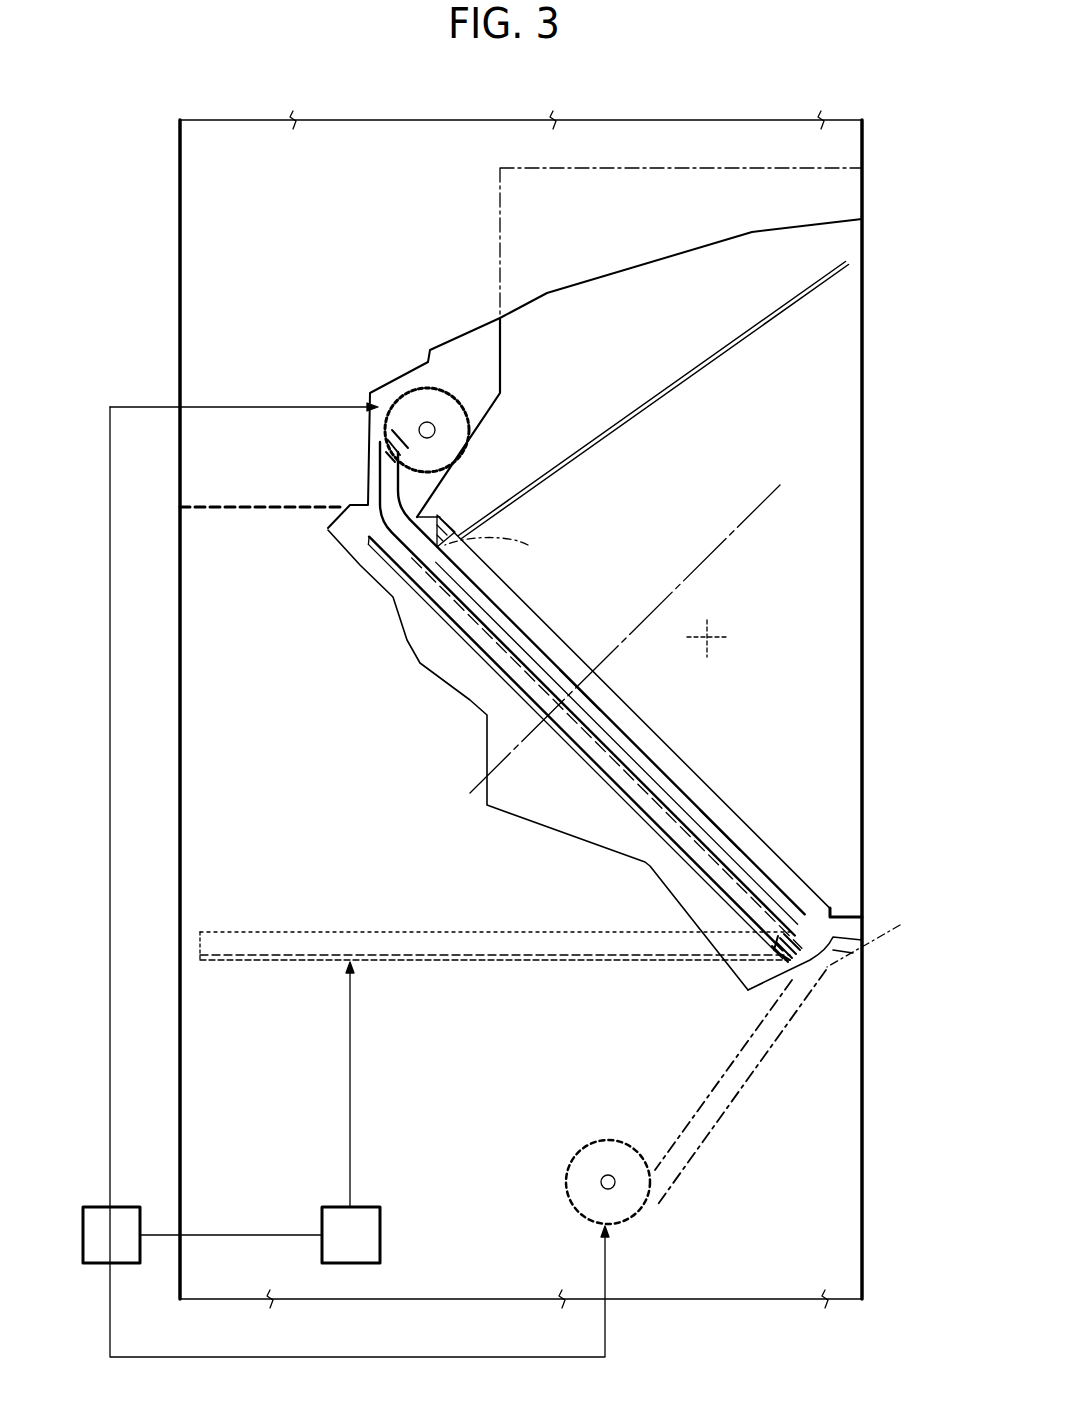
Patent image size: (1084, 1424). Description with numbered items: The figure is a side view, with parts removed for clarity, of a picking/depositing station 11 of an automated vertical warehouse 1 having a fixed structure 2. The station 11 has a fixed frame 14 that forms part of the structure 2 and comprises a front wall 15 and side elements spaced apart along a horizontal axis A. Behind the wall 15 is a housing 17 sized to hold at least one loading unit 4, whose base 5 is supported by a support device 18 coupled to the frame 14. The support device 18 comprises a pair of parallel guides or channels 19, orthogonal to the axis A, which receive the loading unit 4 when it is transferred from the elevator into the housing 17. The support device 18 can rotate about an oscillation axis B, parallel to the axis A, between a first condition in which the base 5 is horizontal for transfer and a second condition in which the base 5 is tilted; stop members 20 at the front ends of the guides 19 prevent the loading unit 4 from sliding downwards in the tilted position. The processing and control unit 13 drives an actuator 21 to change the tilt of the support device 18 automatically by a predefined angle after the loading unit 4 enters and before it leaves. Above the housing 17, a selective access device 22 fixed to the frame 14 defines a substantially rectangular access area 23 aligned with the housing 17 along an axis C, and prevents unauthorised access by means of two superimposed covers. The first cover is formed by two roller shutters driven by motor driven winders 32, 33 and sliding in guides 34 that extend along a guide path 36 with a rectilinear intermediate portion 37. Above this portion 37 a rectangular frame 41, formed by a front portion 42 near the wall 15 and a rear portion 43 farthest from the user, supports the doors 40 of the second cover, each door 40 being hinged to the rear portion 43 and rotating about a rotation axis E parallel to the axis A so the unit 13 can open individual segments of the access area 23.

The automated vertical warehouse 1 is at (150, 74).
The fixed structure 2 is at (170, 217).
The loading unit 4 is at (358, 530).
The base 5 is at (362, 566).
The picking/depositing station 11 is at (872, 232).
The processing and control unit 13 is at (95, 1210).
The fixed frame 14 is at (844, 904).
The front wall 15 is at (872, 1120).
The housing 17 is at (186, 945).
The support device 18 is at (430, 629).
The guides or channels 19 is at (485, 677).
The stop members 20 is at (852, 998).
The actuator 21 is at (363, 1215).
The selective access device 22 is at (724, 793).
The access area 23 is at (733, 868).
The motor driven winder 32 is at (575, 1200).
The motor driven winder 33 is at (410, 392).
The guides 34 is at (746, 1102).
The guide path 36 is at (593, 658).
The rectilinear intermediate portion 37 is at (568, 666).
The door 40 is at (812, 293).
The rectangular frame 41 is at (674, 730).
The front portion 42 is at (842, 952).
The rear portion 43 is at (462, 510).
The horizontal axis A is at (712, 632).
The oscillation axis B is at (745, 975).
The axis C is at (752, 462).
The rotation axis E is at (528, 545).